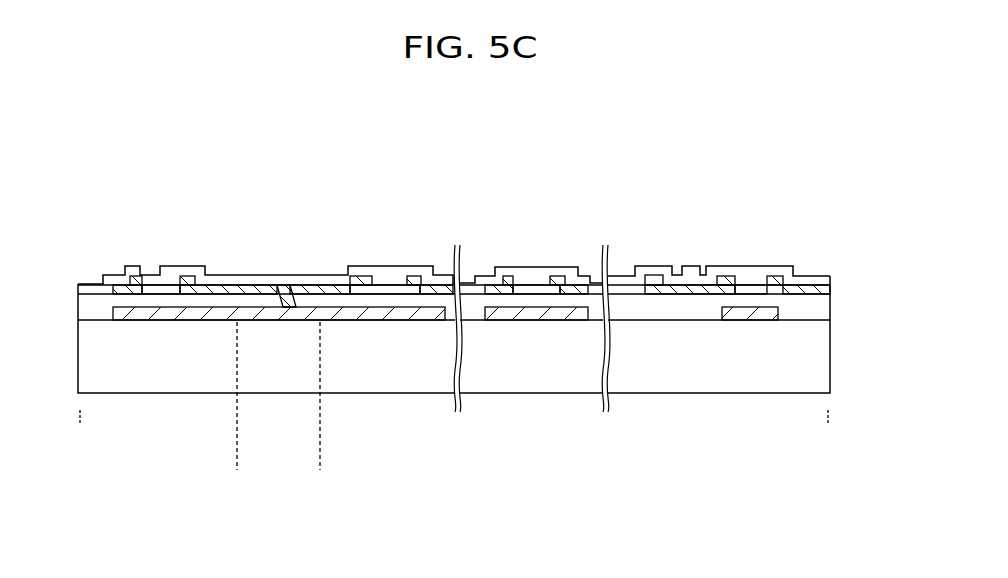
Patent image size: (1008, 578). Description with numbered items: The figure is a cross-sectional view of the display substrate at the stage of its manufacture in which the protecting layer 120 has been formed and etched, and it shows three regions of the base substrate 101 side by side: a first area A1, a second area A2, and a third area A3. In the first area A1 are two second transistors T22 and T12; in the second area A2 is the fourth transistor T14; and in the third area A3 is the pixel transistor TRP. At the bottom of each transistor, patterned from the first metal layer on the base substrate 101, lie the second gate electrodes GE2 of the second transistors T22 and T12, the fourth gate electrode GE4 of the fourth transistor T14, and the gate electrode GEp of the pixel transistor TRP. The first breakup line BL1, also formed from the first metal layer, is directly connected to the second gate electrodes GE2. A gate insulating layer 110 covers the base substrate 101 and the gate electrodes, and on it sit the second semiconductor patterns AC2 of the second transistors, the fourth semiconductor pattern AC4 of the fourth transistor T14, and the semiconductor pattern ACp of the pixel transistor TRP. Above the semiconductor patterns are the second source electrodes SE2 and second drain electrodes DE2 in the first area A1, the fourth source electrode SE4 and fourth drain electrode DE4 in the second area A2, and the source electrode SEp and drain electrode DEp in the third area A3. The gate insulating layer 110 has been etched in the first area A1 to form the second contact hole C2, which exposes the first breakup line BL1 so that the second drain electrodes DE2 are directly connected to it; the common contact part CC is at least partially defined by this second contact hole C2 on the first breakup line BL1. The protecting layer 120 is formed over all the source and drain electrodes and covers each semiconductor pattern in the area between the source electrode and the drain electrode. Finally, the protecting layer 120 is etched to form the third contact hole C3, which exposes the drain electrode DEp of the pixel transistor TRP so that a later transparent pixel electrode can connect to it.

The second source electrode SE2 is at (137, 280).
The second semiconductor pattern AC2 is at (162, 292).
The second drain electrode DE2 is at (215, 284).
The second contact hole C2 is at (282, 300).
The second gate electrode GE2 is at (148, 322).
The first breakup line BL1 is at (272, 322).
The fourth source electrode SE4 is at (512, 282).
The fourth semiconductor pattern AC4 is at (535, 292).
The fourth drain electrode DE4 is at (565, 283).
The fourth gate electrode GE4 is at (535, 322).
The gate insulating layer 110 is at (645, 313).
The third contact hole C3 is at (683, 283).
The drain electrode of the pixel transistor DEp is at (730, 283).
The semiconductor pattern of the pixel transistor ACp is at (748, 292).
The source electrode of the pixel transistor SEp is at (777, 283).
The protecting layer 120 is at (815, 283).
The gate electrode of the pixel transistor GEp is at (745, 322).
The base substrate 101 is at (632, 375).
The second transistor T22 is at (112, 448).
The common contact part CC is at (320, 466).
The second transistor T12 is at (320, 448).
The fourth transistor T14 is at (605, 448).
The pixel transistor TRP is at (655, 448).
The first area A1 is at (460, 514).
The second area A2 is at (606, 495).
The third area A3 is at (830, 495).